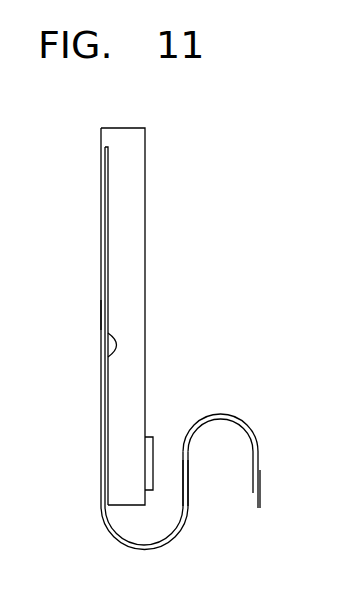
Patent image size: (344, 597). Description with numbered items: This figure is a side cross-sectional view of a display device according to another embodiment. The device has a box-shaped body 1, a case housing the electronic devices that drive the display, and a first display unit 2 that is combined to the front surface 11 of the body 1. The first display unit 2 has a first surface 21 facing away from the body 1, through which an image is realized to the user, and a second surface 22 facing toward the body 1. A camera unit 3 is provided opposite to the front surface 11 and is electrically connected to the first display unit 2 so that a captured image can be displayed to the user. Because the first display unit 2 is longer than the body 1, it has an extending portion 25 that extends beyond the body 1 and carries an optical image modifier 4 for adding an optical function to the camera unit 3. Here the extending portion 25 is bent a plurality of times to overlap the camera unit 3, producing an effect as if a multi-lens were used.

The body 1 is at (140, 176).
The front surface 11 is at (106, 225).
The first display unit 2 is at (104, 266).
The first surface 21 is at (102, 314).
The second surface 22 is at (112, 355).
The camera unit 3 is at (150, 437).
The optical image modifier 4 is at (190, 478).
The extending portion 25 is at (258, 451).